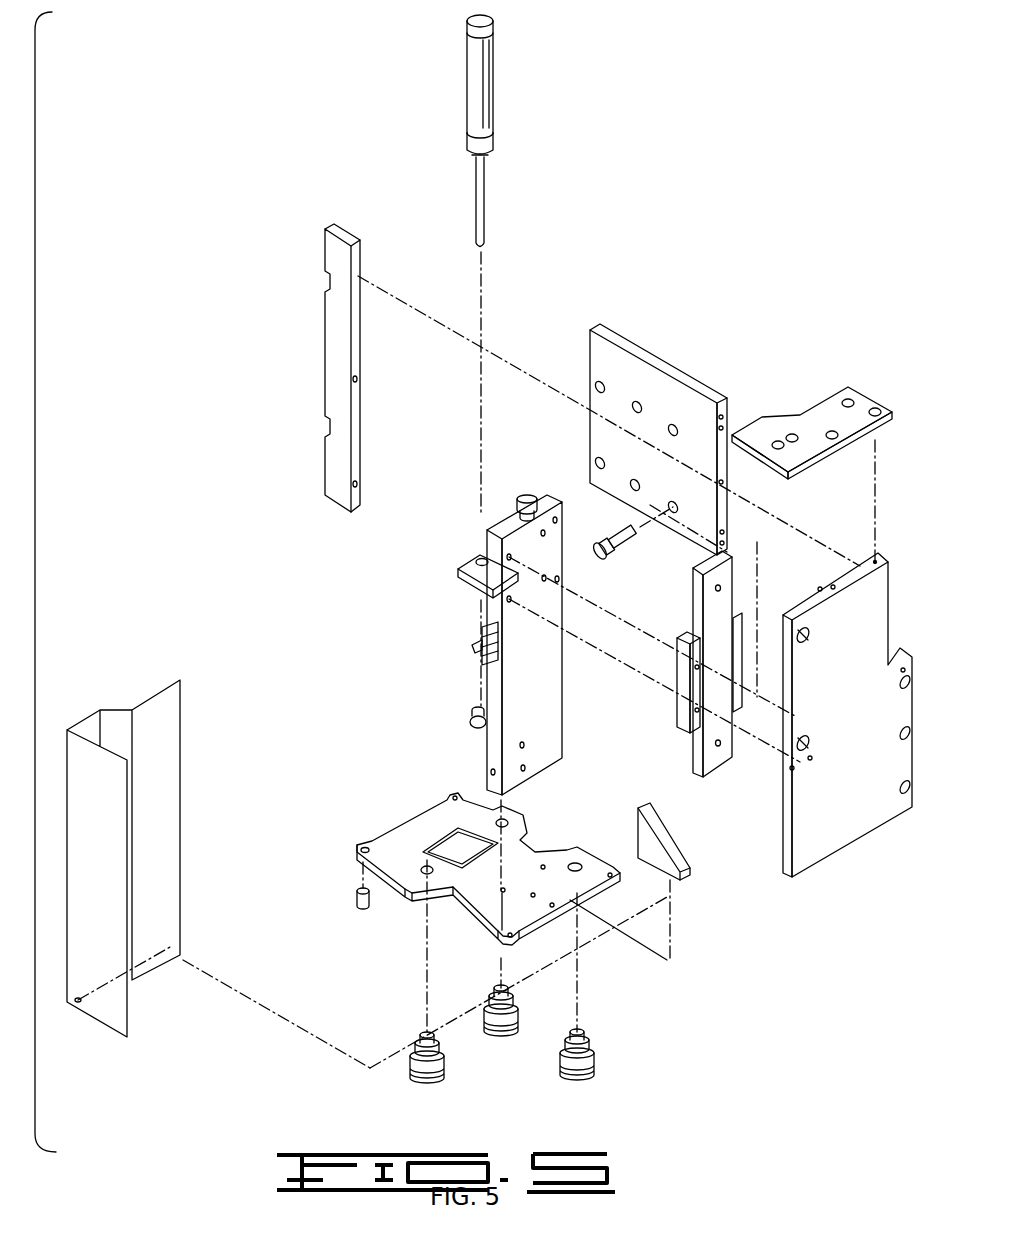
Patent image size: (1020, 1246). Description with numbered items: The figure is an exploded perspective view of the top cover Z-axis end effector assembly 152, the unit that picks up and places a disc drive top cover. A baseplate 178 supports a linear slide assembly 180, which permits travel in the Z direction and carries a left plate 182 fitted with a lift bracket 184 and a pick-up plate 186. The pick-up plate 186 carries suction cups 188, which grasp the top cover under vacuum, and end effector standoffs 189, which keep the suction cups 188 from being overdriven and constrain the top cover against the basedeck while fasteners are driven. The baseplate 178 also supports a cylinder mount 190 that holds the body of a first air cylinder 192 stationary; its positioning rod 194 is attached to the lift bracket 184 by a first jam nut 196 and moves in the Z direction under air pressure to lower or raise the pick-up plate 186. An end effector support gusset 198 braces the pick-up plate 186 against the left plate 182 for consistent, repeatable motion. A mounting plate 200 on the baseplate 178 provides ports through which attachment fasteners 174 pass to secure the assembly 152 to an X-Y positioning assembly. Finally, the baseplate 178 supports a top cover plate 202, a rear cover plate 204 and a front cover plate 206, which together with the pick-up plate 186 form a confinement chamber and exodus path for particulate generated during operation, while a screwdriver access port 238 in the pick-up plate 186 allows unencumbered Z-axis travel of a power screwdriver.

The top cover Z-axis end effector assembly 152 is at (245, 160).
The attachment fasteners 174 is at (608, 543).
The baseplate 178 is at (812, 830).
The linear slide assembly 180 is at (690, 740).
The left plate 182 is at (497, 518).
The lift bracket 184 is at (470, 650).
The pick-up plate 186 is at (412, 833).
The suction cups 188 is at (557, 1060).
The end effector standoffs 189 is at (355, 890).
The cylinder mount 190 is at (462, 573).
The first air cylinder 192 is at (487, 100).
The positioning rod 194 is at (483, 204).
The first jam nut 196 is at (470, 718).
The end effector support gusset 198 is at (665, 857).
The mounting plate 200 is at (667, 363).
The top cover plate 202 is at (858, 403).
The rear cover plate 204 is at (322, 342).
The front cover plate 206 is at (165, 728).
The screwdriver access port 238 is at (462, 847).